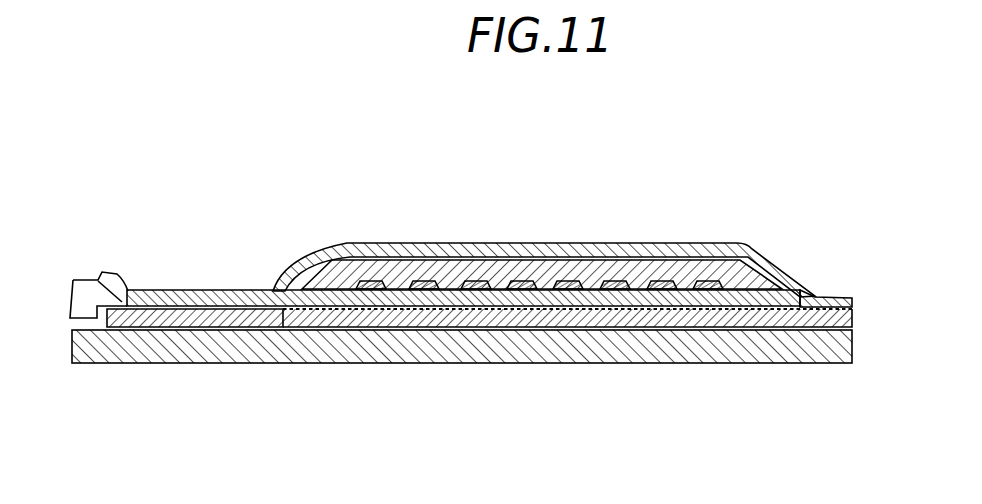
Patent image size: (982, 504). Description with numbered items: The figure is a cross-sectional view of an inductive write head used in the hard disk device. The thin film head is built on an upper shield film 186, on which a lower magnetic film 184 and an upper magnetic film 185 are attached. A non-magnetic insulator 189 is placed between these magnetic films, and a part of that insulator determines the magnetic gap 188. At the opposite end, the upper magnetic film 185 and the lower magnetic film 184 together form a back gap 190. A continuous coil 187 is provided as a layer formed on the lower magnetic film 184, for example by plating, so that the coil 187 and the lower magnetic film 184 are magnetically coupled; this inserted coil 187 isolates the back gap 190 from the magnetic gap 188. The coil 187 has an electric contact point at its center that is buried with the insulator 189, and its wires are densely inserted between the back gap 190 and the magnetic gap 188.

The lower magnetic film 184 is at (741, 328).
The upper magnetic film 185 is at (732, 243).
The upper shield film 186 is at (370, 345).
The coil 187 is at (468, 281).
The magnetic gap 188 is at (843, 298).
The non-magnetic insulator 189 is at (348, 278).
The back gap 190 is at (193, 302).